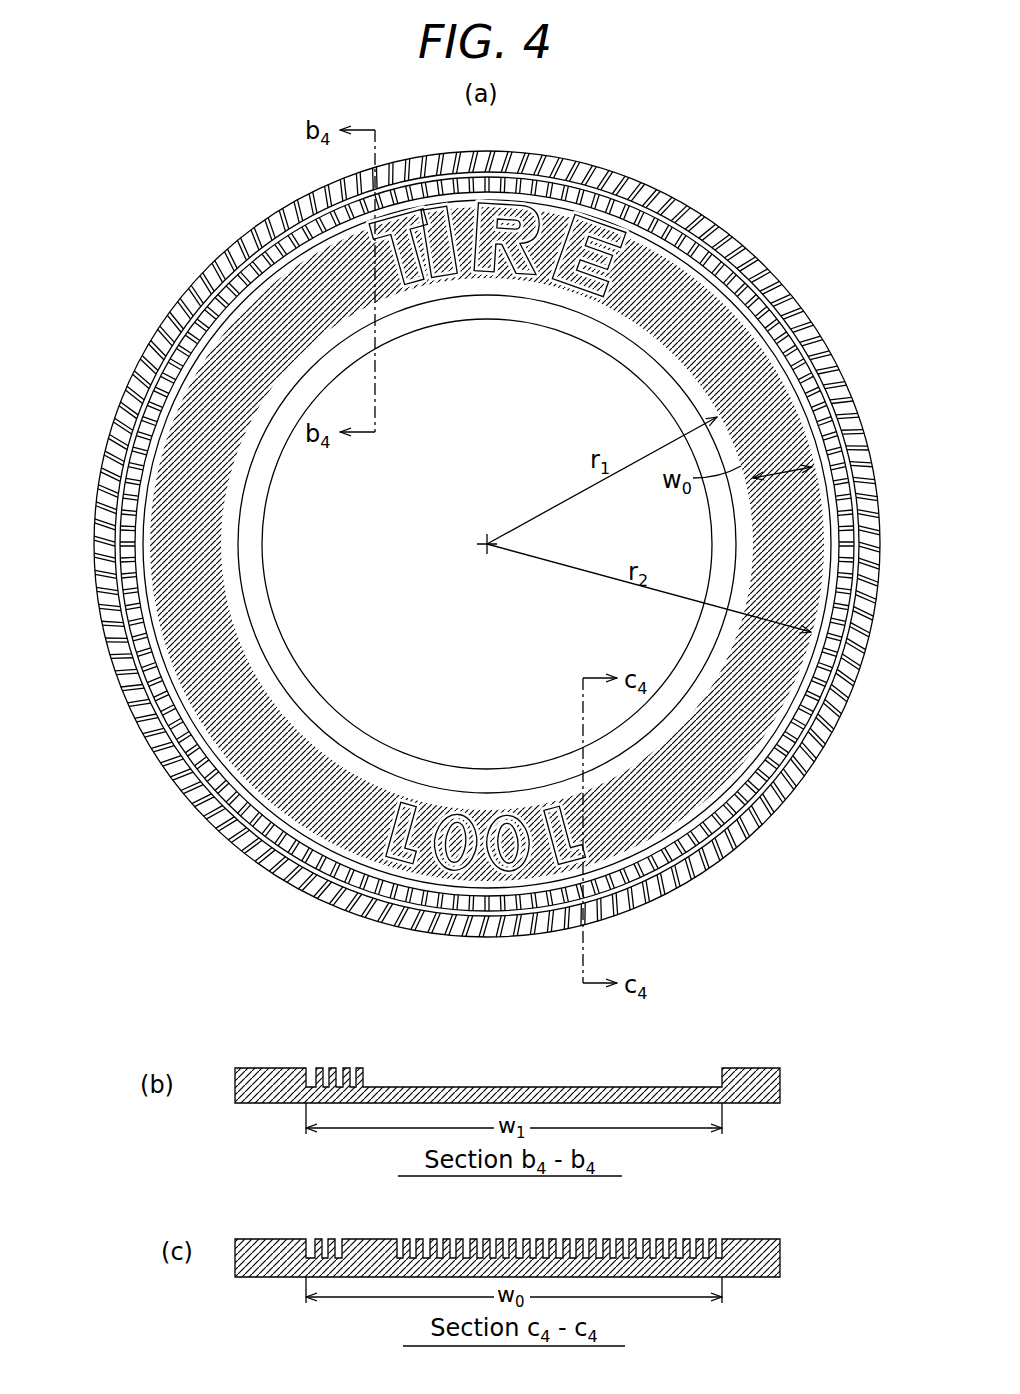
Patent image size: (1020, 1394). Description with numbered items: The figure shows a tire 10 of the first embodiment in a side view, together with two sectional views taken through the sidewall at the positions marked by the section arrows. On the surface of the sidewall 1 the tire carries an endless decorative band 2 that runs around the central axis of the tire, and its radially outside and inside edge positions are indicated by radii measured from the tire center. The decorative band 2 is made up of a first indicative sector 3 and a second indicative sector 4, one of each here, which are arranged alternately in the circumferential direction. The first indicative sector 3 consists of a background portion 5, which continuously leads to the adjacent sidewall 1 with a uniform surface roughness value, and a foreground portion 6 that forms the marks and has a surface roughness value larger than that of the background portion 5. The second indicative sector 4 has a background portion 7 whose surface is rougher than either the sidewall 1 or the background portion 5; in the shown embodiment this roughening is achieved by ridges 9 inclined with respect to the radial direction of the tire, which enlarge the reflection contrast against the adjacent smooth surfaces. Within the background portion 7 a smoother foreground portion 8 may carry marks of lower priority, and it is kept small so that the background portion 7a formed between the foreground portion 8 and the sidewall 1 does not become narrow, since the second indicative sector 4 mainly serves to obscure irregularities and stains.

The sidewall 1 is at (275, 273).
The endless decorative band 2 is at (655, 129).
The first indicative sector 3 is at (637, 247).
The second indicative sector 4 is at (667, 247).
The background portion 5 is at (553, 238).
The foreground portion 6 is at (582, 220).
The background portion 7 is at (702, 318).
The background portion 7a is at (595, 867).
The foreground portion 8 is at (560, 862).
The ridges 9 is at (348, 1068).
The tire 10 is at (732, 203).